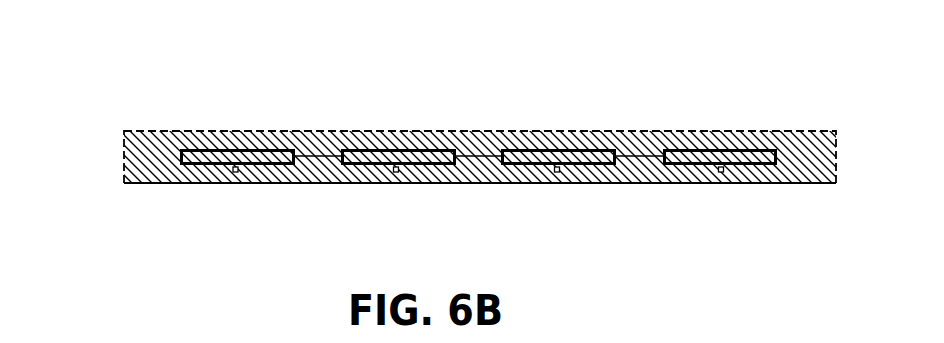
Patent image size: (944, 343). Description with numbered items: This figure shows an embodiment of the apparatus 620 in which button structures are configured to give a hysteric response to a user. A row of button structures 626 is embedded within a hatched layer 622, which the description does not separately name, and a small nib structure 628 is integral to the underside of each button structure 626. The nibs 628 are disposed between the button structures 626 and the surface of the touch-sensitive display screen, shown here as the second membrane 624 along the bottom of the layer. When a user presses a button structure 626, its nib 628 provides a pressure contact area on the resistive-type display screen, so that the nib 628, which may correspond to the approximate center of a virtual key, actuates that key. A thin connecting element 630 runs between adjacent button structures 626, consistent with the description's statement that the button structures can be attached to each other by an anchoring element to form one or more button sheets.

The apparatus 620 is at (144, 44).
The substrate 622 is at (478, 130).
The second membrane 624 is at (462, 183).
The button structures 626 is at (718, 150).
The nib structures 628 is at (235, 173).
The electrical connector 630 is at (320, 155).